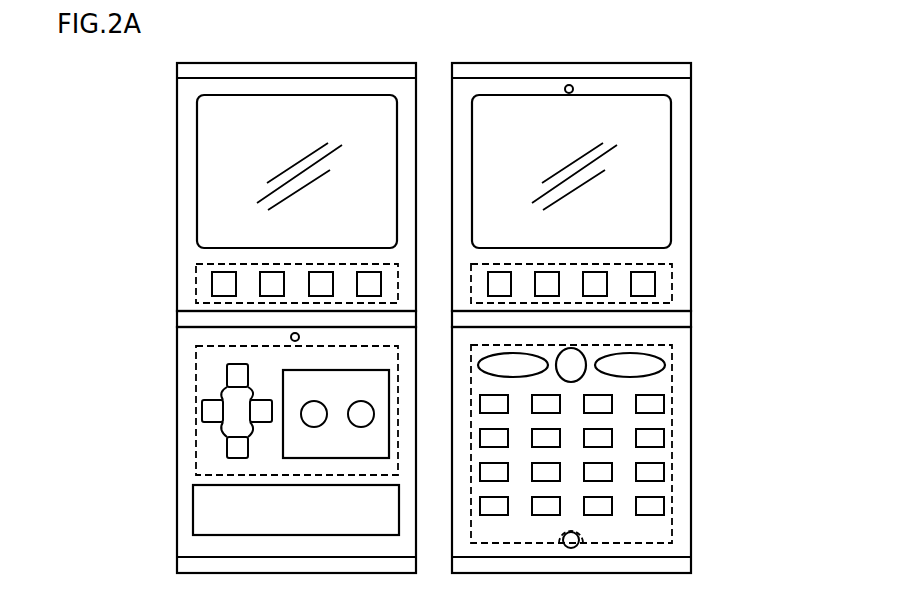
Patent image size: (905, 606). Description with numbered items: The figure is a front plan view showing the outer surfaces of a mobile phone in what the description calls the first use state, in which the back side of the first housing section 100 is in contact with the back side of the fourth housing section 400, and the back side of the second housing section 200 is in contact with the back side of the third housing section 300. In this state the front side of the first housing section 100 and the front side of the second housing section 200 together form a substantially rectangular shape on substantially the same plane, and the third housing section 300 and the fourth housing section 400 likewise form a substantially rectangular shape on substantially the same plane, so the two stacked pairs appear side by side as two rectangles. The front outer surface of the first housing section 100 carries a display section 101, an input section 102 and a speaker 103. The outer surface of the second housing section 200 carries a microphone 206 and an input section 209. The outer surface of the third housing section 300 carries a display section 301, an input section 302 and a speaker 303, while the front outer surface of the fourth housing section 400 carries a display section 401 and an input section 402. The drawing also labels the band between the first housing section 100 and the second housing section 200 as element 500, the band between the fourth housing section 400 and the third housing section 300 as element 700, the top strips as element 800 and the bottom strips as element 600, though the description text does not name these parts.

The first housing section 100 is at (692, 198).
The display section 101 is at (660, 140).
The input section 102 is at (672, 283).
The speaker 103 is at (569, 85).
The second housing section 200 is at (692, 382).
The microphone 206 is at (572, 548).
The input section 209 is at (672, 456).
The third housing section 300 is at (177, 387).
The display section 301 is at (193, 500).
The input section 302 is at (196, 458).
The speaker 303 is at (291, 337).
The fourth housing section 400 is at (177, 196).
The display section 401 is at (203, 137).
The input section 402 is at (196, 282).
The hinge 500 is at (692, 320).
The bottom cap 600 is at (185, 565).
The hinge 700 is at (185, 320).
The top cap 800 is at (403, 70).